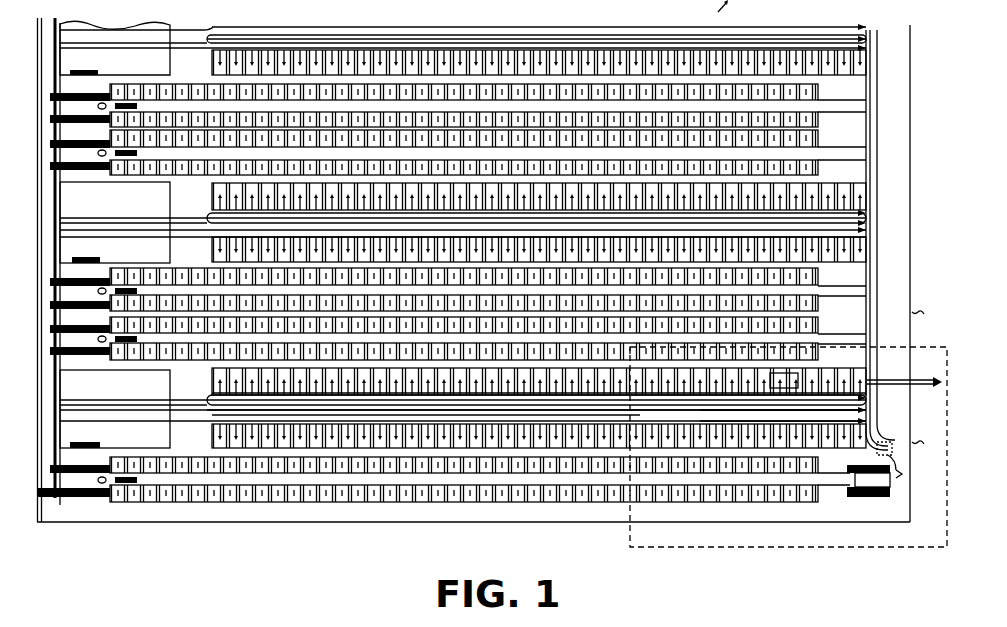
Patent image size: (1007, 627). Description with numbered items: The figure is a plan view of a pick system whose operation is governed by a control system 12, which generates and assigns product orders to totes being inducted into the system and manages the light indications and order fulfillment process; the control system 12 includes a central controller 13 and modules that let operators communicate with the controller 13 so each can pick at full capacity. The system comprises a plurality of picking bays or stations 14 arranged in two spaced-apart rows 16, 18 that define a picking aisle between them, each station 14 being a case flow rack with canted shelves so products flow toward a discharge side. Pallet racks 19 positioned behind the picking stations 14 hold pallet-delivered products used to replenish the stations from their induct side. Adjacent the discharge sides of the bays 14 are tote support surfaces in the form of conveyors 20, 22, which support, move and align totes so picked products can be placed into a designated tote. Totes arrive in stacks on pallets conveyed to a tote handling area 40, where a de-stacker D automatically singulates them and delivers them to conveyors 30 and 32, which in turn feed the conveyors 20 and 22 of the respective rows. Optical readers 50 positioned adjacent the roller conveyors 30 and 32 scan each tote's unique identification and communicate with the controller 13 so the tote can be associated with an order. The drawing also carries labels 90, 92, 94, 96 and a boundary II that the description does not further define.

The control system 12 is at (810, 374).
The central controller 13 is at (784, 373).
The picking bays or stations 14 is at (684, 72).
The row of picking bays 16 is at (690, 205).
The row of picking bays 18 is at (690, 244).
The pallet racks 19 is at (520, 170).
The conveyor 20 is at (563, 405).
The conveyor 22 is at (598, 408).
The conveyor 30 is at (812, 395).
The conveyor 32 is at (805, 425).
The tote handling area 40 is at (873, 488).
The optical readers 50 is at (738, 430).
The line section 90 is at (330, 413).
The line section 92 is at (400, 410).
The line section 94 is at (447, 410).
The outlet flow arrow 96 is at (905, 373).
The de-stacker D is at (890, 437).
The detail view boundary II is at (850, 548).